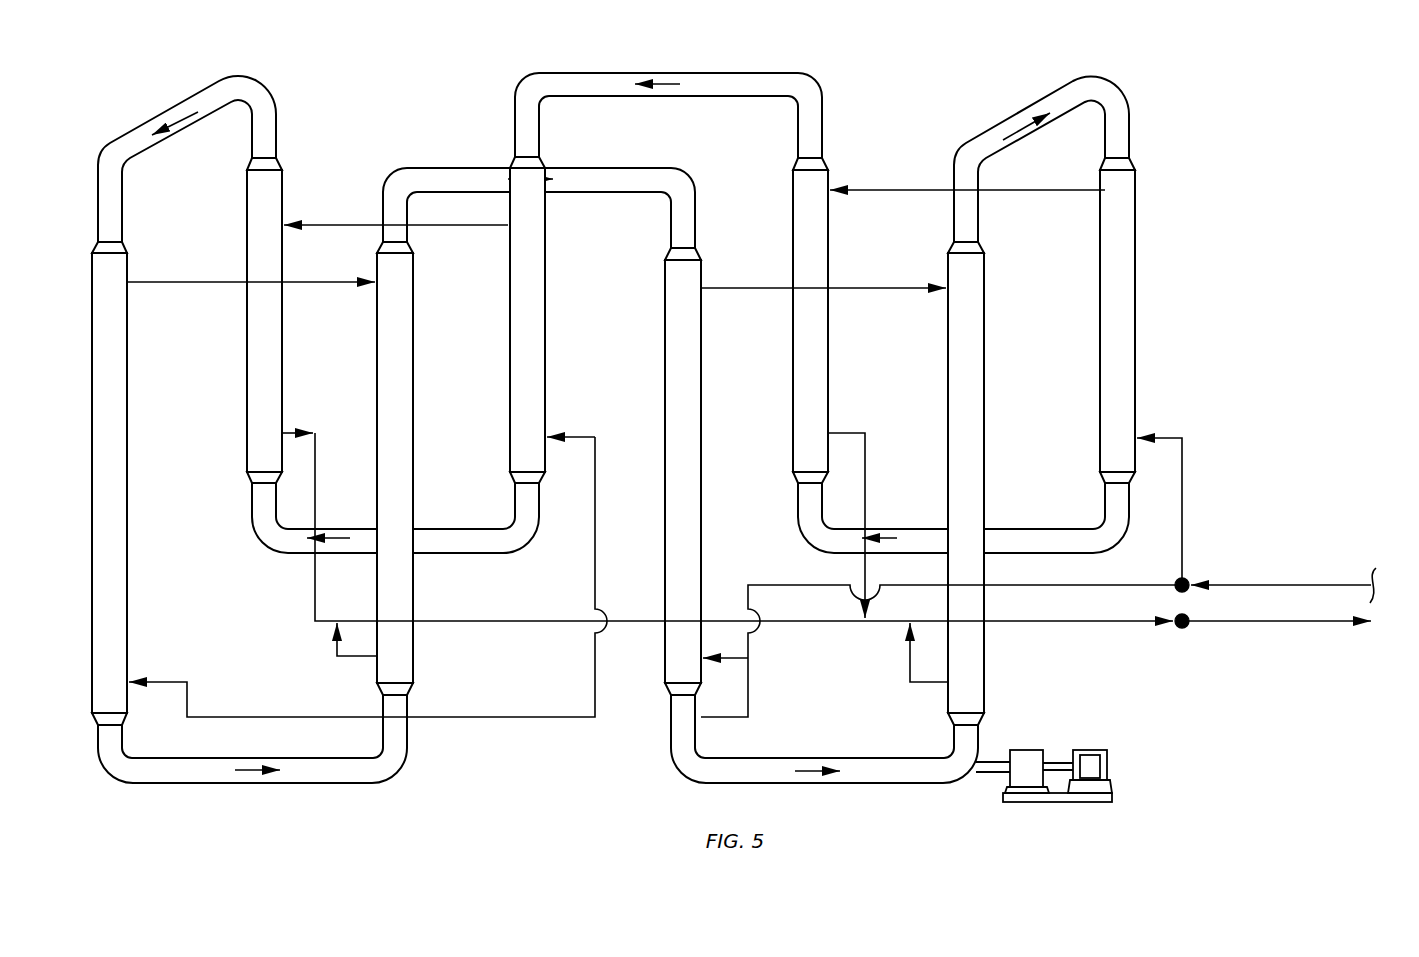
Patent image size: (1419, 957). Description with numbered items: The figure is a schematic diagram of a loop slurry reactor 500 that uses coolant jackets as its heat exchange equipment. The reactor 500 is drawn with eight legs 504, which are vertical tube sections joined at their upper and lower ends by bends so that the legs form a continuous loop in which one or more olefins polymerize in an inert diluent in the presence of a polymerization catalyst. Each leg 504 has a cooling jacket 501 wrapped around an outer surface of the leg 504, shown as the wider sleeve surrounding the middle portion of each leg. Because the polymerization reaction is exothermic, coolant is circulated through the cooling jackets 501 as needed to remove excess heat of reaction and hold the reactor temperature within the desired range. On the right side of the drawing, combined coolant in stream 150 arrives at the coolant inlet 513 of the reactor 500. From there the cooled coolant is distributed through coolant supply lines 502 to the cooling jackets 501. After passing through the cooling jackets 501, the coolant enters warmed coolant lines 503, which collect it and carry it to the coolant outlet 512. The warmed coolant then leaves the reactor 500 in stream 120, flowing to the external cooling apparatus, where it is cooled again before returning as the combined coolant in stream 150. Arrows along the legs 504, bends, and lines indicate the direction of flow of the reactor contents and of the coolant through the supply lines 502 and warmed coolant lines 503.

The loop slurry reactor 500 is at (916, 114).
The cooling jacket 501 is at (128, 509).
The coolant supply lines 502 is at (262, 717).
The warmed coolant lines 503 is at (315, 582).
The leg 504 is at (284, 150).
The coolant outlet 512 is at (1185, 628).
The coolant inlet 513 is at (1176, 580).
The combined coolant stream 150 is at (1268, 585).
The warmed coolant stream 120 is at (1287, 622).